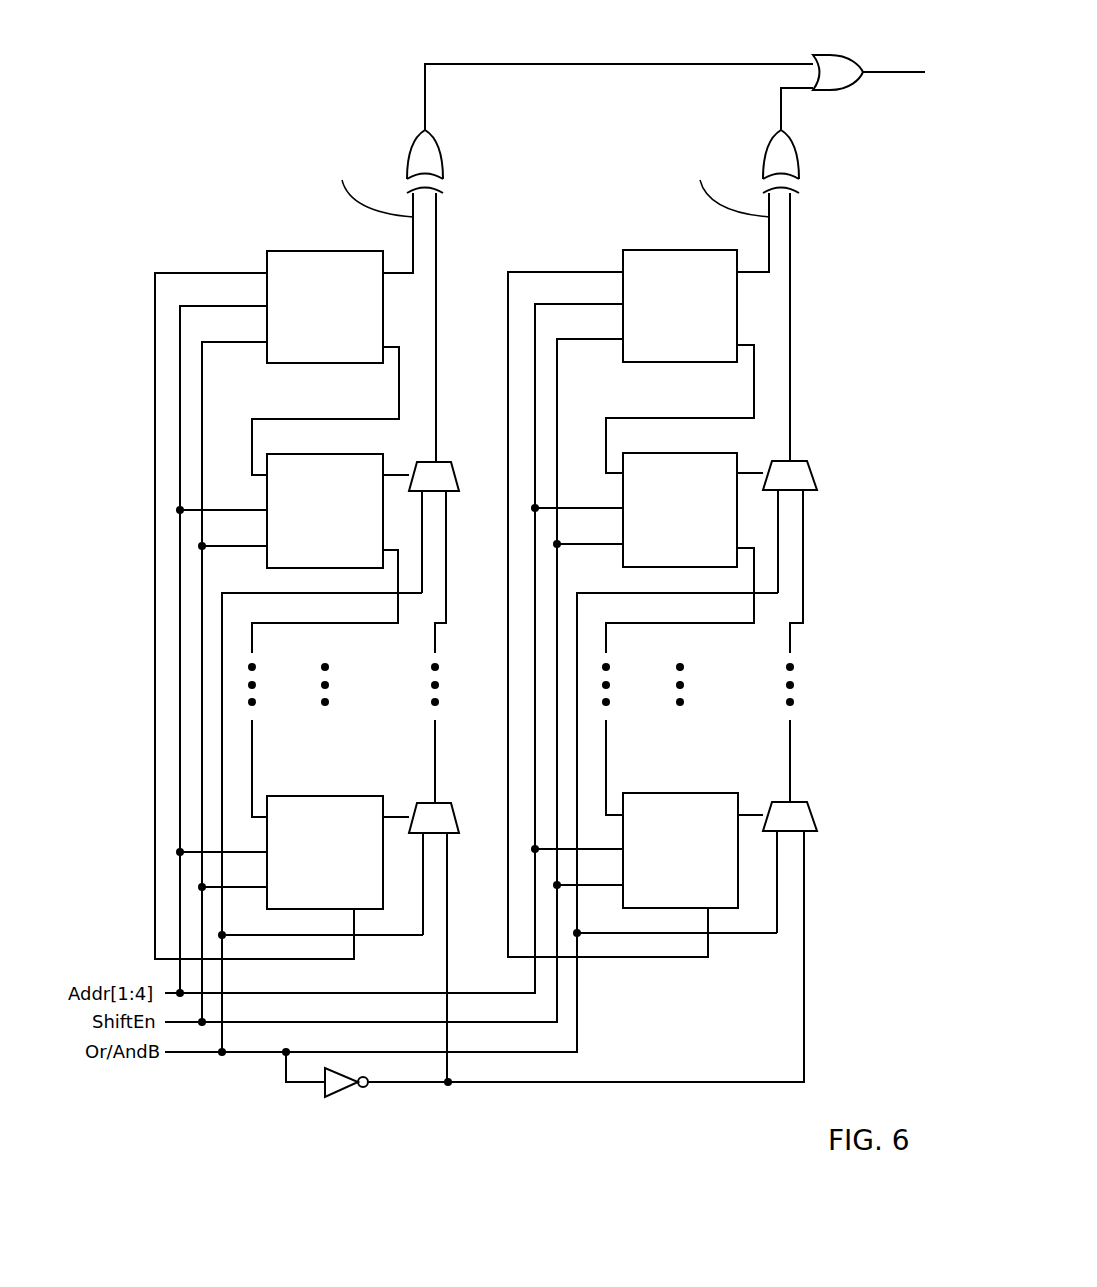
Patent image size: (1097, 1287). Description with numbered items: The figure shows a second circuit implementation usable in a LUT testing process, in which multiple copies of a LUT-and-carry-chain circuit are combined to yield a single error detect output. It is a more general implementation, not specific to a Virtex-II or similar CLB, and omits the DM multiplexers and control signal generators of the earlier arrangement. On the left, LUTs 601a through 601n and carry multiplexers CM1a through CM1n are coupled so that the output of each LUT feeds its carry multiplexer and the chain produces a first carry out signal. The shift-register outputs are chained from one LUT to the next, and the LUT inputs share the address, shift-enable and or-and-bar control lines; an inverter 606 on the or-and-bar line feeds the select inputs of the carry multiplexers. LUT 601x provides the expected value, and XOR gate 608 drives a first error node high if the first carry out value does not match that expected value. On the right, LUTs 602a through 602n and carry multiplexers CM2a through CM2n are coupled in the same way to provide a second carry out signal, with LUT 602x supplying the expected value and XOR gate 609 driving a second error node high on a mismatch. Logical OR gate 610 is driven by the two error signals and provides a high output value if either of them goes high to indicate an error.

The LUT 601x is at (373, 251).
The LUT 601a is at (373, 454).
The LUT 601n is at (375, 796).
The LUT 602x is at (727, 250).
The LUT 602a is at (727, 453).
The LUT 602n is at (728, 793).
The inverter 606 is at (338, 1090).
The XOR gate 608 is at (403, 157).
The XOR gate 609 is at (760, 157).
The logical OR gate 610 is at (830, 54).
The carry multiplexer CM1a is at (472, 460).
The carry multiplexer CM1n is at (472, 800).
The carry multiplexer CM2a is at (830, 458).
The carry multiplexer CM2n is at (830, 800).